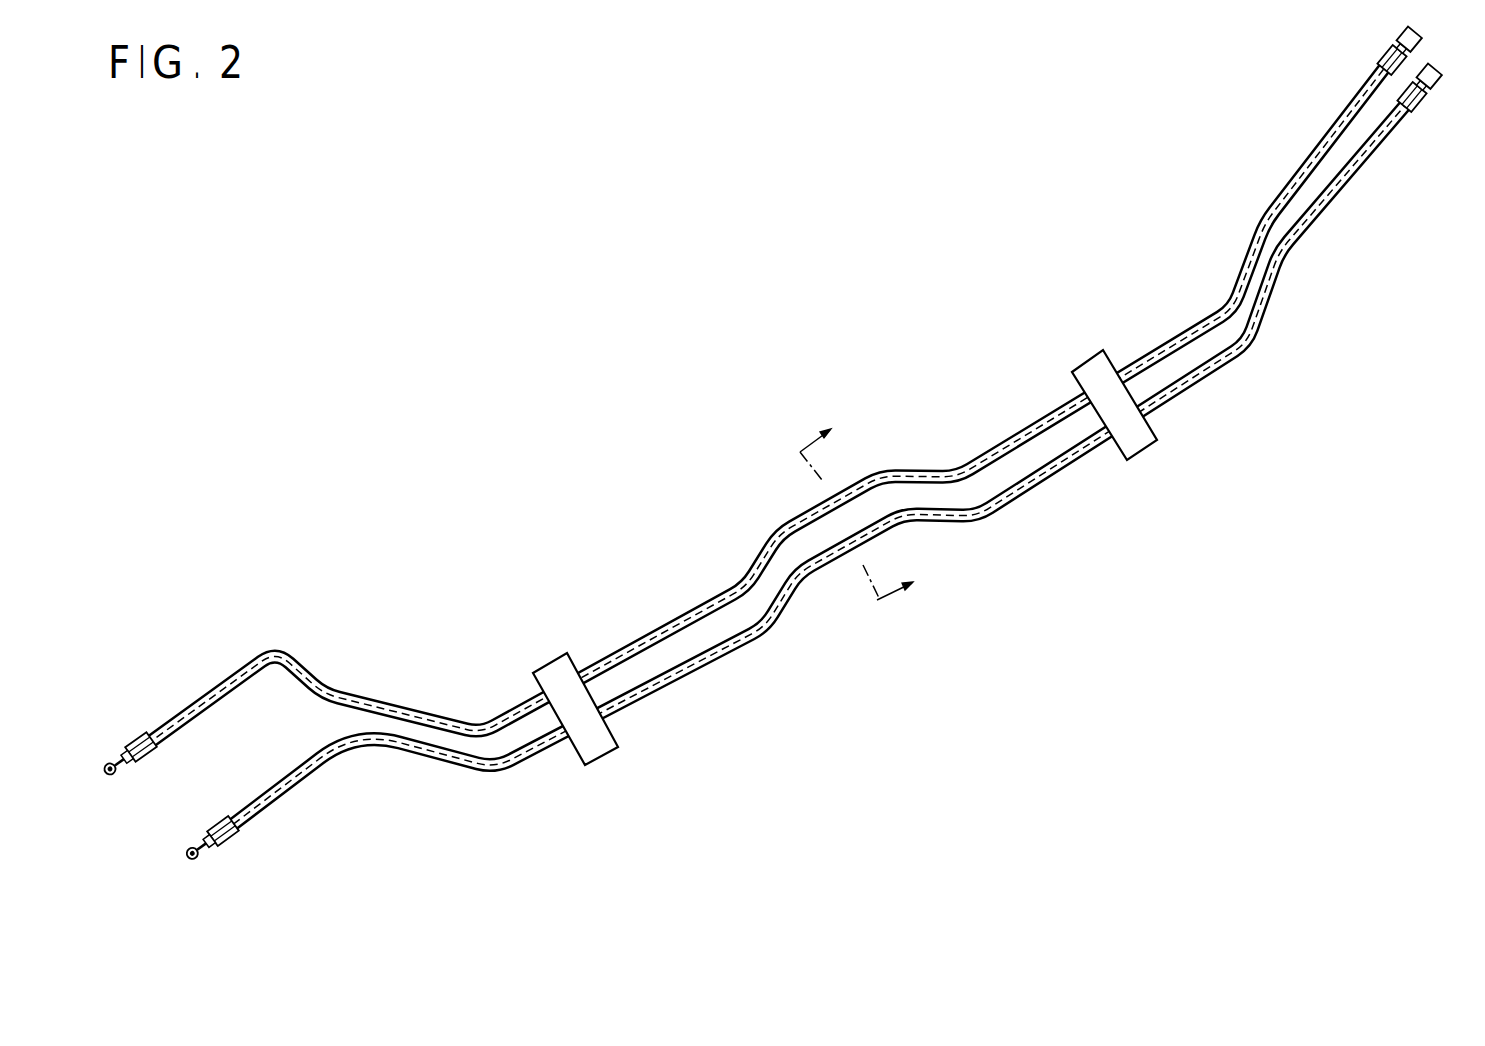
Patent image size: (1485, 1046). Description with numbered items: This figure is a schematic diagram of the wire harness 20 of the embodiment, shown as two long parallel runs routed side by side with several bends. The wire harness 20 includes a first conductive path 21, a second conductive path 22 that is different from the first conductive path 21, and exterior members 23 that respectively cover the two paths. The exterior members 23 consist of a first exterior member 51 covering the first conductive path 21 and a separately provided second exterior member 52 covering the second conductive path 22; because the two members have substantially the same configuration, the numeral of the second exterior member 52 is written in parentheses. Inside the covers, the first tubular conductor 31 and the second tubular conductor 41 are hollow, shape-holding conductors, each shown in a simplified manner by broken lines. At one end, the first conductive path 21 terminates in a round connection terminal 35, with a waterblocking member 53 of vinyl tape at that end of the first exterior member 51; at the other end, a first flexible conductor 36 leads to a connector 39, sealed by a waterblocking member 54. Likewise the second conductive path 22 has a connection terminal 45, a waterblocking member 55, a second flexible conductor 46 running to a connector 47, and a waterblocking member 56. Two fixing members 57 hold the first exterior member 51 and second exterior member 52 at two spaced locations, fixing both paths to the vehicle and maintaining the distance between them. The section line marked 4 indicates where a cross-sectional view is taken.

The wire harness 20 is at (556, 456).
The first conductive path 21 is at (122, 755).
The second conductive path 22 is at (213, 845).
The exterior members 23 is at (660, 624).
The first tubular conductor 31 is at (1027, 434).
The connection terminal 35 is at (109, 768).
The first flexible conductor 36 is at (1397, 43).
The connector 39 is at (1405, 34).
The second tubular conductor 41 is at (1046, 474).
The connection terminal 45 is at (192, 853).
The second flexible conductor 46 is at (1431, 90).
The connector 47 is at (1439, 74).
The first exterior member 51 is at (769, 401).
The second exterior member 52 is at (818, 463).
The waterblocking member 53 is at (133, 752).
The waterblocking member 54 is at (1393, 57).
The waterblocking member 55 is at (215, 836).
The waterblocking member 56 is at (1413, 94).
The fixing members 57 is at (601, 762).
The section line IV-IV 4 is at (867, 500).